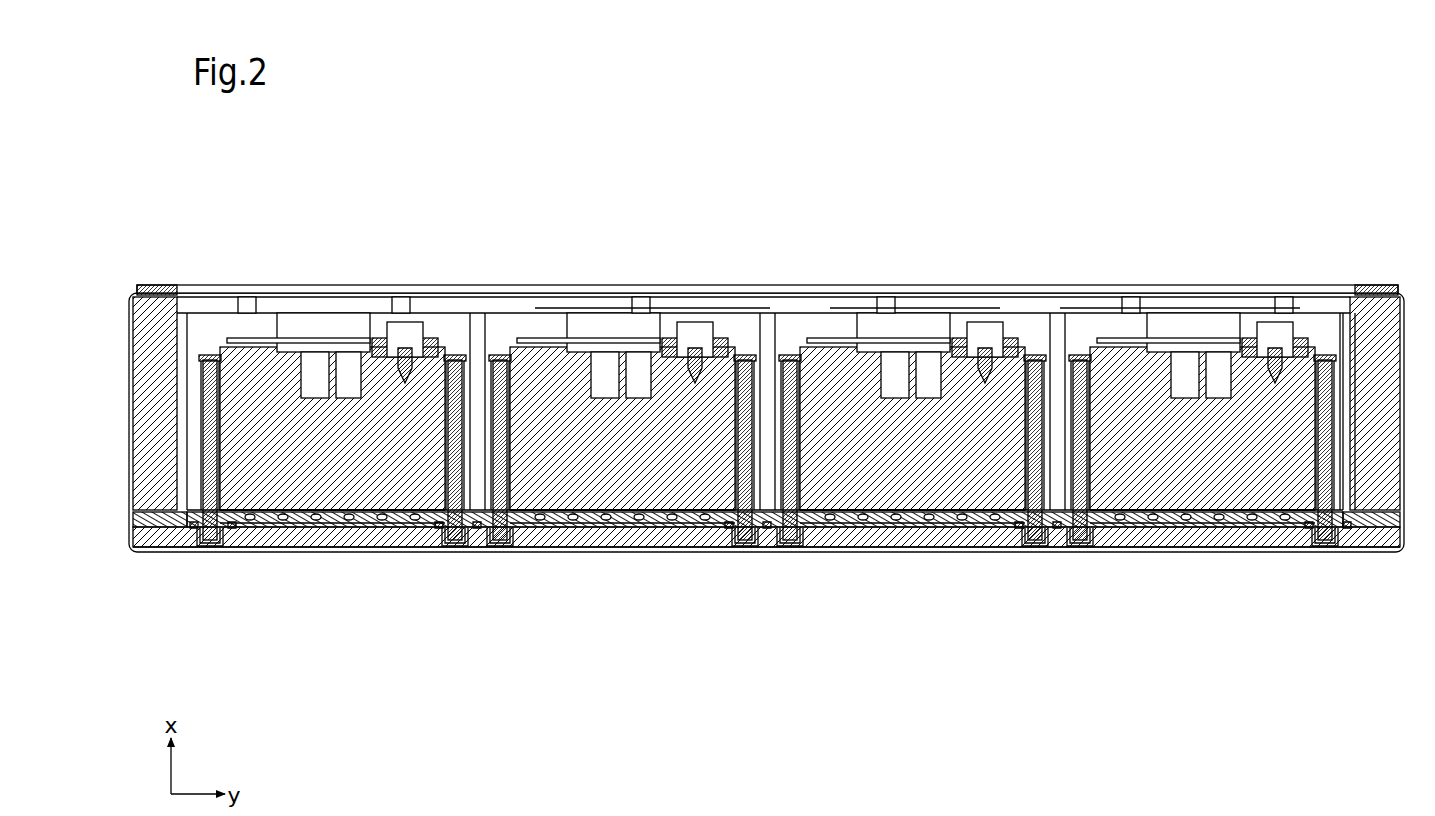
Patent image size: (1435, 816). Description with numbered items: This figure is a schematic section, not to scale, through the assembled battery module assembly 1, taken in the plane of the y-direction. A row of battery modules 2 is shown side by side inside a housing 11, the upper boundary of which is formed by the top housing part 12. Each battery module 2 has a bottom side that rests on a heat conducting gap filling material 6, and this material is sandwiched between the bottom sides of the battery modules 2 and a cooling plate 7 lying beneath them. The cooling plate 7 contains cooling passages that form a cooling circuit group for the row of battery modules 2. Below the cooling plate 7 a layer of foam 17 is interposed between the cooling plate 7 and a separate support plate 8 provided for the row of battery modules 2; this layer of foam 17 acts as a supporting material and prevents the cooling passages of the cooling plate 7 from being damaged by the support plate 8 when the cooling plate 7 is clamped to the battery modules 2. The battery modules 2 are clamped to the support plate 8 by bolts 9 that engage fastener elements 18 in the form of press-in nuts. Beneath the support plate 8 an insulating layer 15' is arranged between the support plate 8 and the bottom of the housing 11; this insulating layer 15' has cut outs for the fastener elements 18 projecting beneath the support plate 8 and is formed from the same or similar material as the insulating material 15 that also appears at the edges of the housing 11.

The battery module assembly 1 is at (892, 712).
The battery module 2 is at (263, 385).
The heat conducting gap filling material 6 is at (268, 510).
The cooling plate 7 is at (767, 580).
The support plate 8 is at (523, 543).
The bolt 9 is at (210, 355).
The housing 11 is at (275, 173).
The top housing part 12 is at (1328, 287).
The insulating material 15 is at (766, 266).
The insulating layer 15' is at (766, 577).
The layer of foam 17 is at (378, 520).
The fastener element 18 is at (218, 548).